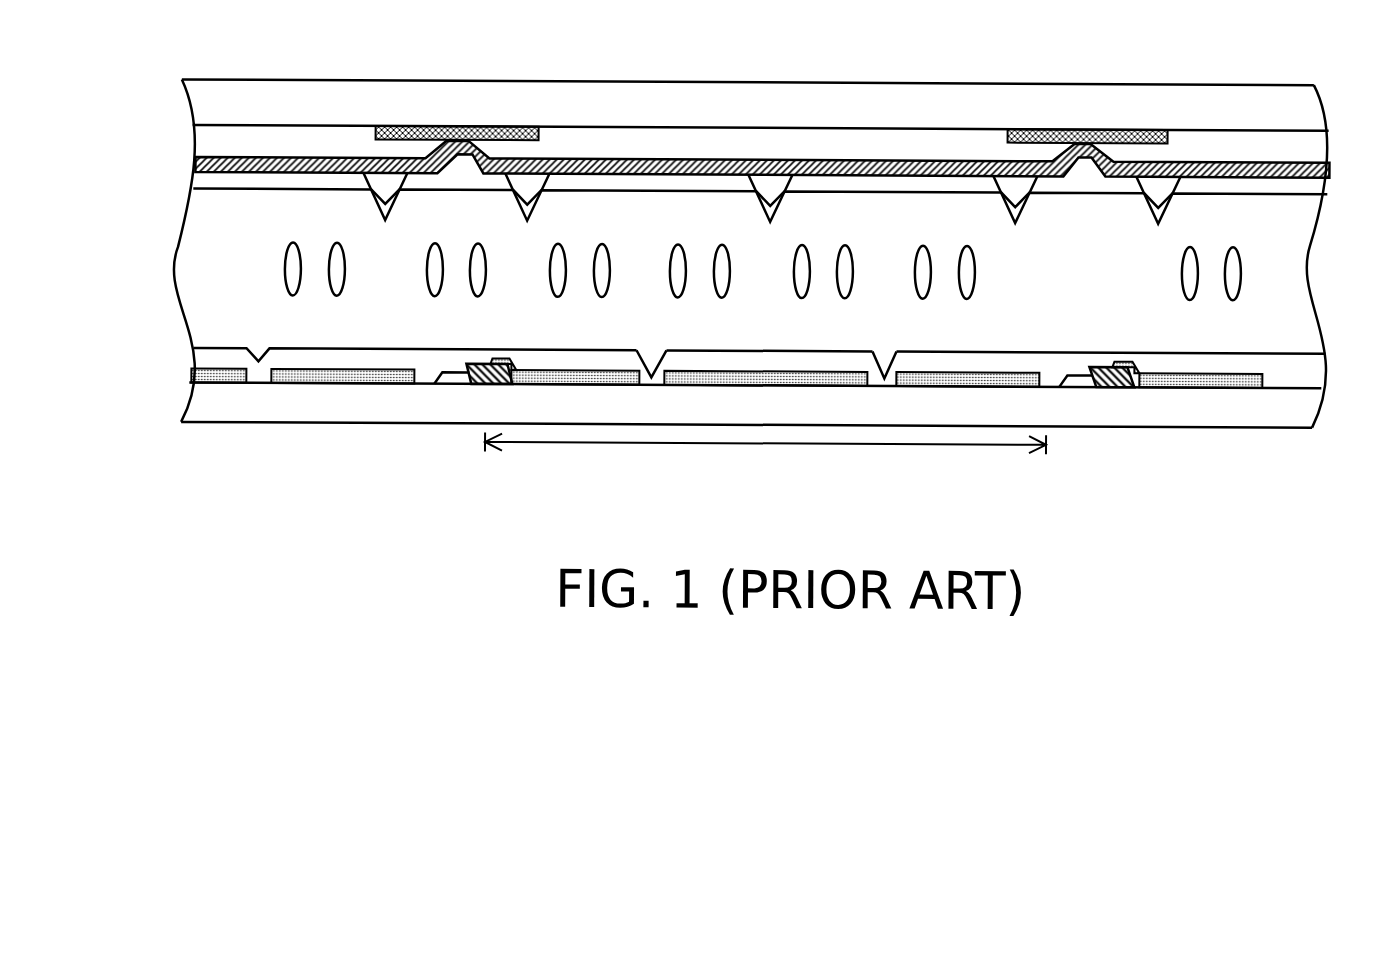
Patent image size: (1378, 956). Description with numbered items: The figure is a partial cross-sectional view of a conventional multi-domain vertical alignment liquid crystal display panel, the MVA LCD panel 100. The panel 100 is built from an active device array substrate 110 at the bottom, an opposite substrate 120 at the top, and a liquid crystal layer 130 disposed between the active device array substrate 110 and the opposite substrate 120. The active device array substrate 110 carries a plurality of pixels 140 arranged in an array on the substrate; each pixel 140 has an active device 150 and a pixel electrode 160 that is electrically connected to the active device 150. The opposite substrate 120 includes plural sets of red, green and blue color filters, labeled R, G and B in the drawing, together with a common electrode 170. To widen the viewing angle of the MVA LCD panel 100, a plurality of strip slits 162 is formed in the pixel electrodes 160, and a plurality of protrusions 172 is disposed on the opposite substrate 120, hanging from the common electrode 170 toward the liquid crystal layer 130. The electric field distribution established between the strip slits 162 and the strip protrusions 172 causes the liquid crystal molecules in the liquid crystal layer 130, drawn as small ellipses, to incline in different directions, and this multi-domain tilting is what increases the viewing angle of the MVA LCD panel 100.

The MVA LCD panel 100 is at (1375, 526).
The active device array substrate 110 is at (707, 400).
The opposite substrate 120 is at (710, 124).
The liquid crystal layer 130 is at (151, 193).
The pixel 140 is at (765, 457).
The active device 150 is at (480, 382).
The pixel electrode 160 is at (558, 370).
The strip slit 162 is at (653, 374).
The common electrode 170 is at (907, 156).
The protrusion 172 is at (770, 177).